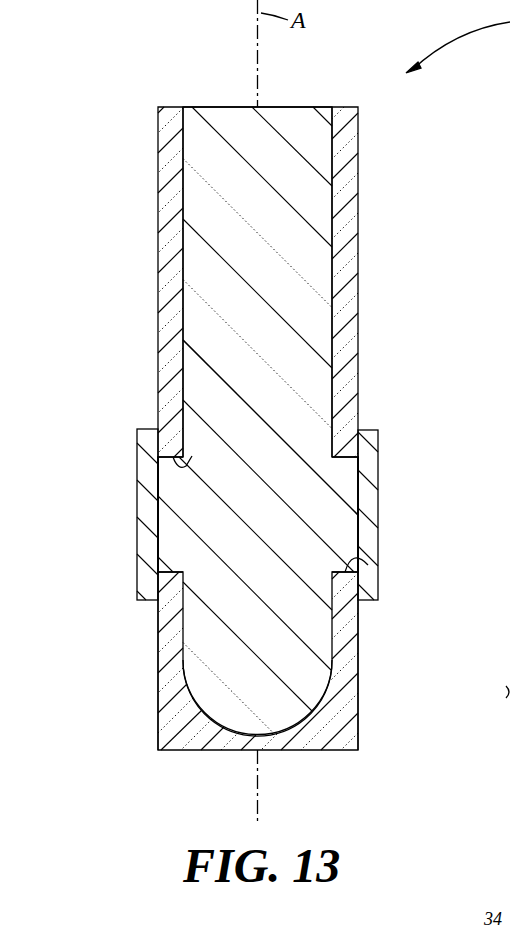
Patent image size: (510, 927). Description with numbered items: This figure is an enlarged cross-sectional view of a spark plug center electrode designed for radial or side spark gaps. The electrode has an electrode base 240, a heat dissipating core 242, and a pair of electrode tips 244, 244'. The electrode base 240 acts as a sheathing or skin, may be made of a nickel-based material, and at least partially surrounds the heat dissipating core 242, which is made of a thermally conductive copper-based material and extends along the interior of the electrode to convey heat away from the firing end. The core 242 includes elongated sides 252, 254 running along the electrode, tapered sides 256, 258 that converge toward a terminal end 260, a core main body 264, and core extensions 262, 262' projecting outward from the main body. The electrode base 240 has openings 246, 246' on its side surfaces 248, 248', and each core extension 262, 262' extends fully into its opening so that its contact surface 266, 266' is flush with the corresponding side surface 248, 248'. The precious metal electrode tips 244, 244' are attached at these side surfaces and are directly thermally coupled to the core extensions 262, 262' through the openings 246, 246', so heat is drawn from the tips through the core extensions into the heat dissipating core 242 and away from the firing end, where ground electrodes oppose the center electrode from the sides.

The electrode base 240 is at (356, 236).
The heat dissipating core 242 is at (276, 372).
The electrode tip 244 is at (102, 514).
The electrode tip 244' is at (413, 515).
The opening 246 is at (205, 442).
The opening 246' is at (406, 574).
The side surface 248 is at (112, 661).
The side surface 248' is at (398, 661).
The elongated side 252 is at (183, 252).
The elongated side 254 is at (332, 278).
The tapered side 256 is at (190, 690).
The tapered side 258 is at (333, 728).
The terminal end 260 is at (253, 734).
The core extension 262 is at (128, 514).
The core extension 262' is at (399, 500).
The core main body 264 is at (234, 545).
The contact surface 266 is at (102, 516).
The contact surface 266' is at (413, 514).